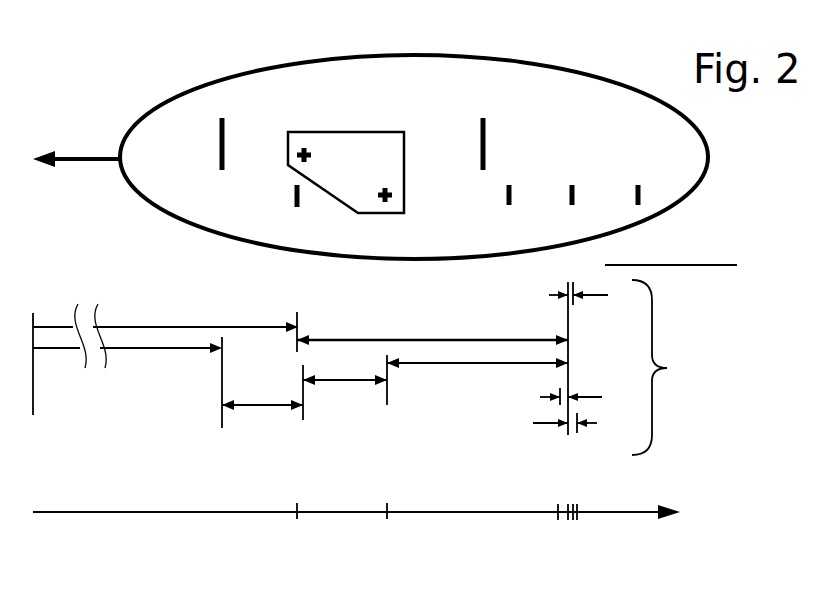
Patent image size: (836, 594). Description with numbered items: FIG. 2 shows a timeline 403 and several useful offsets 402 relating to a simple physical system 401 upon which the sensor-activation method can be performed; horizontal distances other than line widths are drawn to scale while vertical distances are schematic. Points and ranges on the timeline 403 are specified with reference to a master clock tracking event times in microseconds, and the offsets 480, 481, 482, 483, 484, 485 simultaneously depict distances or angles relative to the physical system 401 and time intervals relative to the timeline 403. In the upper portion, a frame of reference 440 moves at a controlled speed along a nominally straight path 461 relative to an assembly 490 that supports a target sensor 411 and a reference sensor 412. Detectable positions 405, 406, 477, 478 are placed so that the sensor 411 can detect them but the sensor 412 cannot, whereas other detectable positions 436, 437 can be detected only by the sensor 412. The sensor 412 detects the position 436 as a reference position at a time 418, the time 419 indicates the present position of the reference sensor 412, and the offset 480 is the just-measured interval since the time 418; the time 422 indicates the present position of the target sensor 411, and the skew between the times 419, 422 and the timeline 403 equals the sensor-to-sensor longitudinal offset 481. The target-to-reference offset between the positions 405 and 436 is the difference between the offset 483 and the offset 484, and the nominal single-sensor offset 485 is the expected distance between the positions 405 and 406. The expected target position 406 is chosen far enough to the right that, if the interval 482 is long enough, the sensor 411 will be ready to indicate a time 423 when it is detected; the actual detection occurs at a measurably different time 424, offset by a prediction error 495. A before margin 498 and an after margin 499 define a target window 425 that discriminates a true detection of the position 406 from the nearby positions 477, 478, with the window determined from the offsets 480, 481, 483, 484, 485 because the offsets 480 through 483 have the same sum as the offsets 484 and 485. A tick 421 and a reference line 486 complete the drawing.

The physical system 401 is at (712, 265).
The offsets 402 is at (672, 367).
The timeline 403 is at (369, 501).
The detectable position 405 is at (295, 206).
The detectable position 406 is at (563, 208).
The sensor 411 is at (368, 202).
The sensor 412 is at (321, 146).
The time 418 is at (220, 440).
The time 419 is at (304, 432).
The position tick 421 is at (298, 524).
The time 422 is at (391, 522).
The time 423 is at (565, 530).
The time 424 is at (576, 530).
The target window 425 is at (575, 493).
The detectable position 436 is at (223, 133).
The detectable position 437 is at (483, 132).
The frame of reference 440 is at (623, 126).
The path 461 is at (76, 145).
The detectable position 477 is at (498, 208).
The detectable position 478 is at (656, 185).
The offset 480 is at (262, 415).
The sensor-to-sensor longitudinal offset 481 is at (345, 391).
The interval 482 is at (477, 380).
The offset 483 is at (127, 360).
The offset 484 is at (165, 336).
The nominal single-sensor longitudinal offset 485 is at (432, 332).
The reference position 486 is at (38, 379).
The assembly 490 is at (400, 158).
The prediction error 495 is at (560, 358).
The before margin 498 is at (551, 398).
The after margin 499 is at (579, 432).